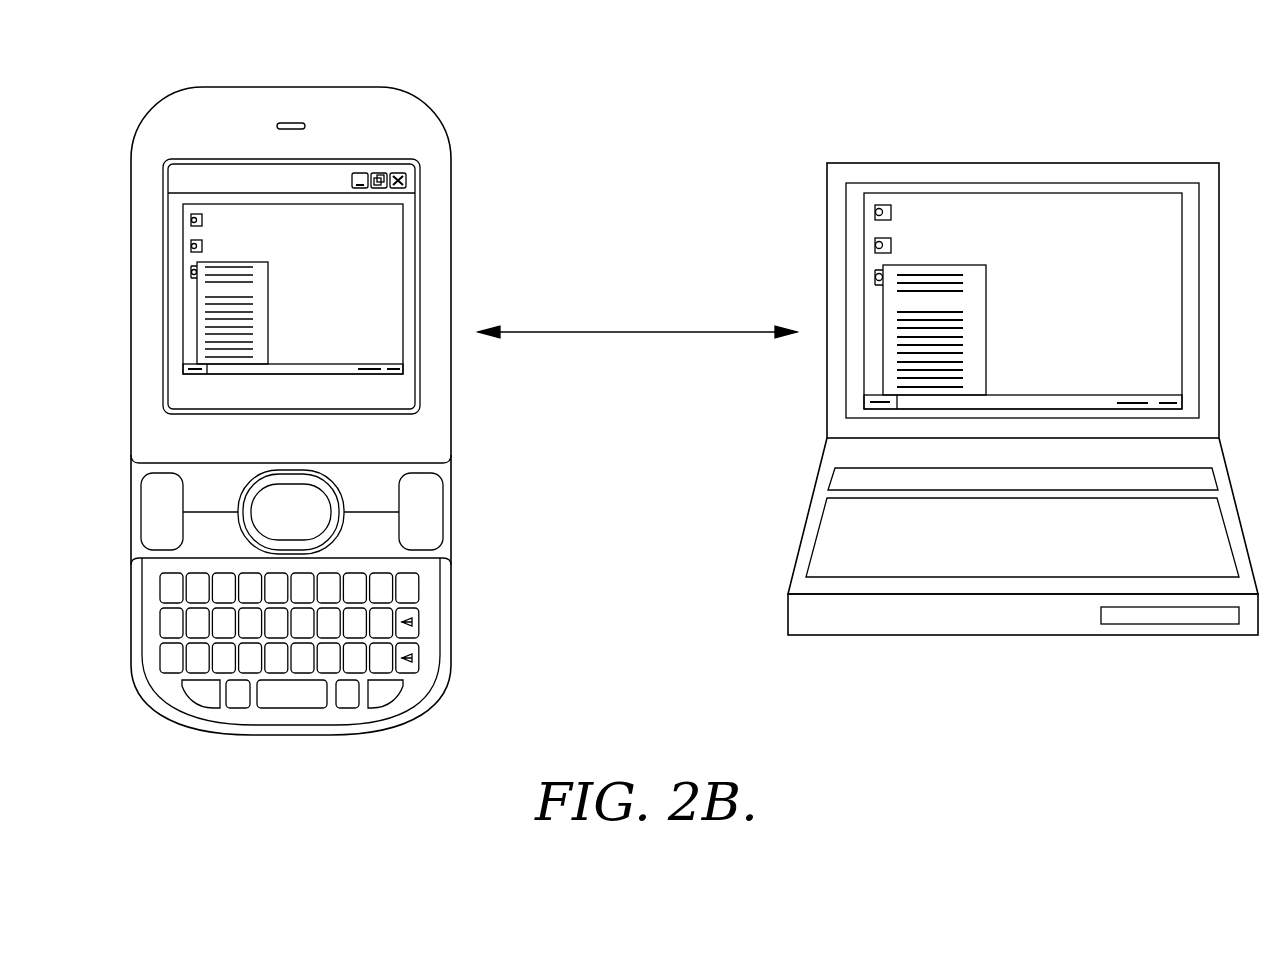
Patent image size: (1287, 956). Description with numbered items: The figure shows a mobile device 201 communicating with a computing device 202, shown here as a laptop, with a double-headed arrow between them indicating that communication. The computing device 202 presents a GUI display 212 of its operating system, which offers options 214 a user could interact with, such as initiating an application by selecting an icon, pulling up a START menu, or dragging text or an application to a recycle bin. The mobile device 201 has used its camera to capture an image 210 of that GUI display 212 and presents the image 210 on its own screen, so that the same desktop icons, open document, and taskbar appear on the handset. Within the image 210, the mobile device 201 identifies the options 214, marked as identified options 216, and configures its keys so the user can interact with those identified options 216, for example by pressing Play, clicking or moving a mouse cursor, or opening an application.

The mobile device 201 is at (424, 106).
The computing device 202 is at (1017, 163).
The image 210 is at (414, 248).
The GUI display 212 is at (1199, 252).
The options 214 is at (864, 405).
The identified options 216 is at (192, 247).